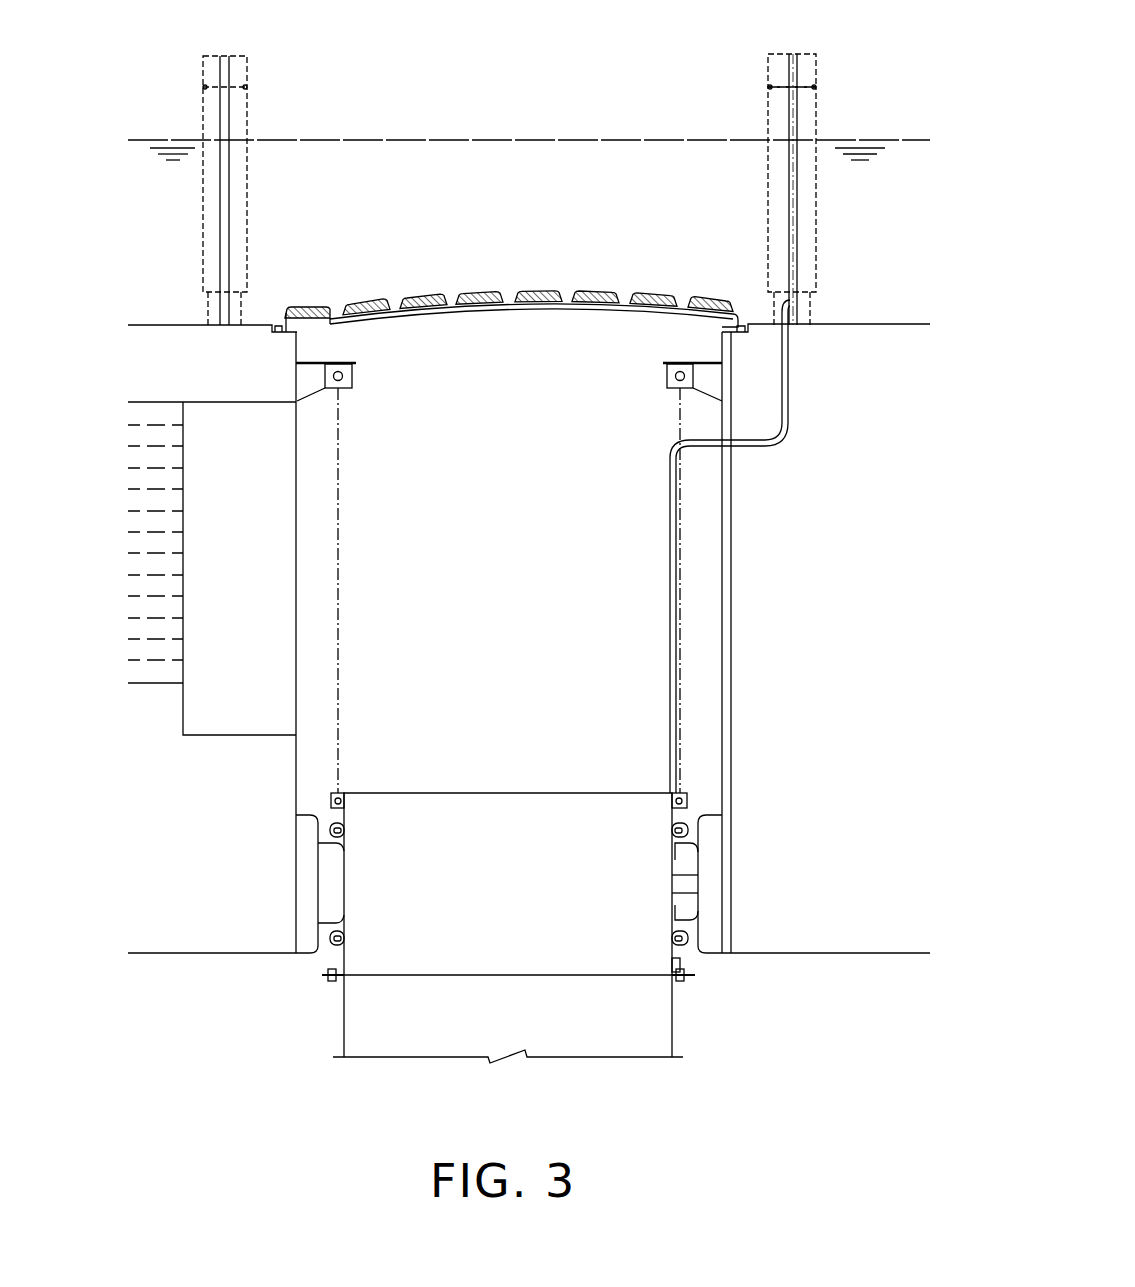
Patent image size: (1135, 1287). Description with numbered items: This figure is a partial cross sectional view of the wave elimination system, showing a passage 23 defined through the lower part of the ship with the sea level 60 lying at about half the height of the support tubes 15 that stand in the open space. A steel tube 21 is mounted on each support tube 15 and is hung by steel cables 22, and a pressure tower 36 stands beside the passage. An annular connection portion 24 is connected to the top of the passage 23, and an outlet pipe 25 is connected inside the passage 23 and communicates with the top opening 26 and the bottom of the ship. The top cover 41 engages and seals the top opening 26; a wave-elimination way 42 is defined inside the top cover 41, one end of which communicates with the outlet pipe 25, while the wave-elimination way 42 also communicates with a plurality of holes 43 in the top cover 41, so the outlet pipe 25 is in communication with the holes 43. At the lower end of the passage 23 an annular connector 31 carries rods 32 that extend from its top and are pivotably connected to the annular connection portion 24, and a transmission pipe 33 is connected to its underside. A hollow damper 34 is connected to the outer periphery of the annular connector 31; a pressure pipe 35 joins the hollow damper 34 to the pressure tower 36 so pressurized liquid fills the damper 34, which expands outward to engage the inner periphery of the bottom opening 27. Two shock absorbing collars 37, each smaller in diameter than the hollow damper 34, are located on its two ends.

The support tube 15 is at (808, 84).
The steel tube 21 is at (817, 268).
The steel cable 22 is at (817, 63).
The passage 23 is at (721, 698).
The annular connection portion 24 is at (666, 376).
The outlet pipe 25 is at (734, 490).
The top opening 26 is at (503, 332).
The bottom opening 27 is at (320, 882).
The annular connector 31 is at (676, 960).
The rod 32 is at (340, 487).
The transmission pipe 33 is at (676, 1020).
The hollow damper 34 is at (689, 848).
The pressure pipe 35 is at (669, 655).
The pressure tower 36 is at (800, 190).
The shock absorbing collar 37 is at (329, 830).
The top cover 41 is at (412, 296).
The wave-elimination way 42 is at (598, 296).
The hole 43 is at (452, 296).
The sea level 60 is at (150, 140).